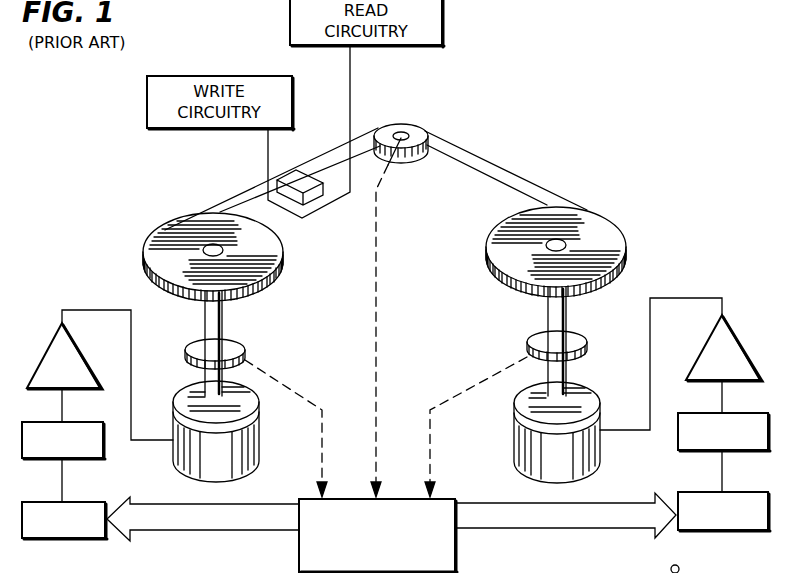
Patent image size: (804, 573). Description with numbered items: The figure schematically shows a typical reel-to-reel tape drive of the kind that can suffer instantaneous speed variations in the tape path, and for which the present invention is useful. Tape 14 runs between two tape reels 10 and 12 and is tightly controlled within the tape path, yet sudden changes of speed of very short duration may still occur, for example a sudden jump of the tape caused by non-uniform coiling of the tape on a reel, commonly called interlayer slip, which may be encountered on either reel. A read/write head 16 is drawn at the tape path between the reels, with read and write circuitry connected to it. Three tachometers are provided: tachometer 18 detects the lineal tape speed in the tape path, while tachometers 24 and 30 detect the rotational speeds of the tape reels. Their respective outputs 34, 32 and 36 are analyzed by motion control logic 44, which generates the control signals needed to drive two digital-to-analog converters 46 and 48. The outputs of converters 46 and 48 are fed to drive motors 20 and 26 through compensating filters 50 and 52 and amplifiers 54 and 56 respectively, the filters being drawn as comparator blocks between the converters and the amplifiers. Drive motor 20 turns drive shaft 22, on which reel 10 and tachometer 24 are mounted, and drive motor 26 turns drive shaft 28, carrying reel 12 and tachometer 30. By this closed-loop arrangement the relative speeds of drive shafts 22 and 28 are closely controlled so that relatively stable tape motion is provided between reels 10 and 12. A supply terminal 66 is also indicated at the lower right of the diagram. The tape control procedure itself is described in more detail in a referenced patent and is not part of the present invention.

The tape reel 10 is at (272, 247).
The tape reel 12 is at (499, 242).
The tape 14 is at (228, 168).
The read/write head 16 is at (286, 178).
The tachometer 18 is at (405, 125).
The drive motor 20 is at (196, 398).
The drive shaft 22 is at (214, 314).
The tachometer 24 is at (192, 349).
The drive motor 26 is at (588, 396).
The drive shaft 28 is at (570, 318).
The tachometer 30 is at (590, 340).
The tachometer output 32 is at (320, 450).
The tachometer output 34 is at (404, 424).
The tachometer output 36 is at (430, 462).
The motion control logic 44 is at (457, 556).
The digital-to-analog converter 46 is at (86, 502).
The digital-to-analog converter 48 is at (742, 492).
The compensating filter 50 is at (86, 422).
The compensating filter 52 is at (742, 413).
The amplifier 54 is at (35, 356).
The amplifier 56 is at (738, 346).
The supply voltage terminal 66 is at (680, 566).